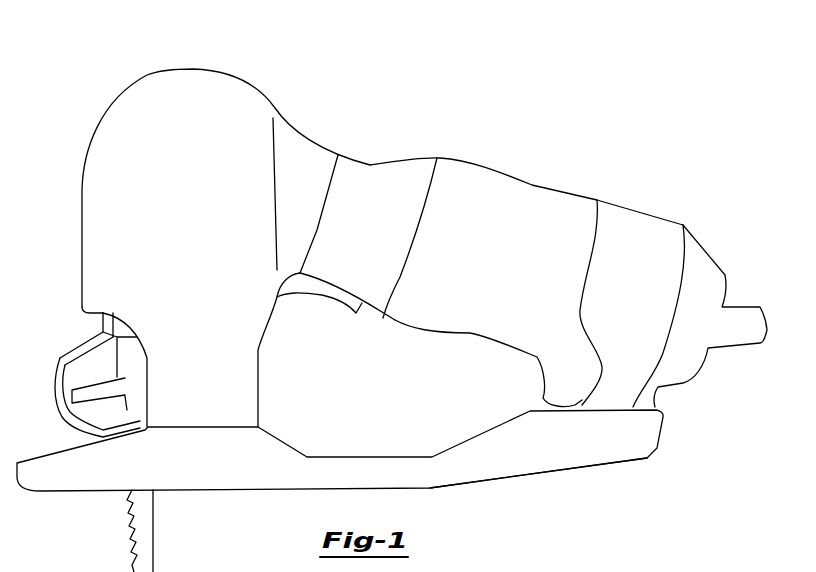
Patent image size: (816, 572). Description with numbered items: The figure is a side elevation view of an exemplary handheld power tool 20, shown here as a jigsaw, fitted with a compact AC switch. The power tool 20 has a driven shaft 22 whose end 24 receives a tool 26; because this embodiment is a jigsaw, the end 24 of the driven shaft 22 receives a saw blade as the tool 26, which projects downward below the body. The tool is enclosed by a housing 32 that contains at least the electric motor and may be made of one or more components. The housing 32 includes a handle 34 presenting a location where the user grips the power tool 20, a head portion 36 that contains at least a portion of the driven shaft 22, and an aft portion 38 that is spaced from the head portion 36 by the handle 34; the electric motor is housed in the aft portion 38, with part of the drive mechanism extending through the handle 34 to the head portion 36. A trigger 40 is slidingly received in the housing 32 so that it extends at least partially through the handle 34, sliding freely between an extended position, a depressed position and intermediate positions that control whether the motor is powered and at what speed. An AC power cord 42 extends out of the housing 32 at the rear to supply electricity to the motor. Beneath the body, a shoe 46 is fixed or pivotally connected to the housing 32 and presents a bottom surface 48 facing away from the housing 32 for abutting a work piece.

The handheld power tool 20 is at (465, 93).
The driven shaft 22 is at (132, 337).
The end 24 is at (135, 385).
The tool 26 is at (148, 518).
The housing 32 is at (222, 322).
The handle 34 is at (497, 165).
The head portion 36 is at (276, 77).
The aft portion 38 is at (706, 197).
The trigger 40 is at (327, 295).
The AC power cord 42 is at (729, 309).
The shoe 46 is at (575, 460).
The bottom surface 48 is at (427, 493).